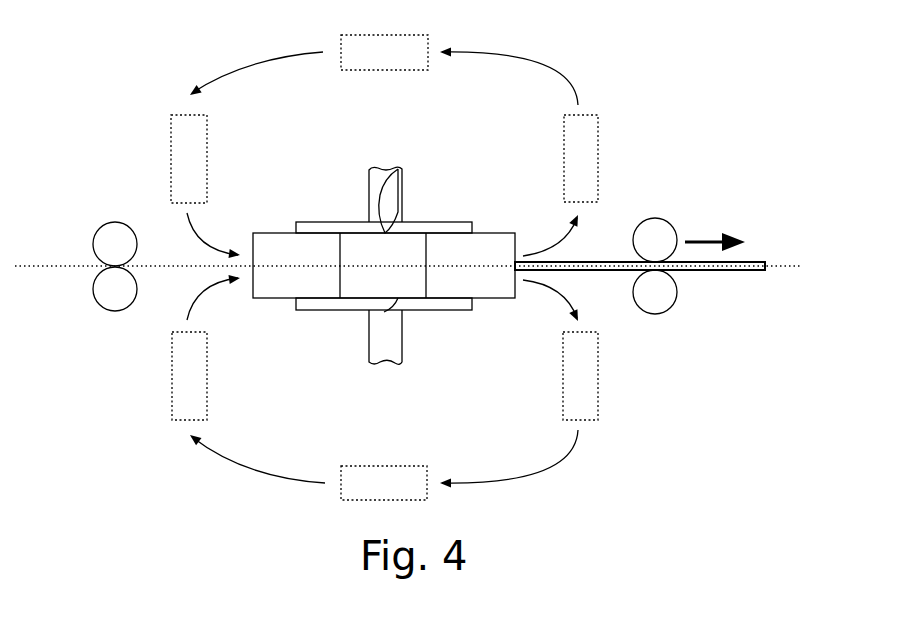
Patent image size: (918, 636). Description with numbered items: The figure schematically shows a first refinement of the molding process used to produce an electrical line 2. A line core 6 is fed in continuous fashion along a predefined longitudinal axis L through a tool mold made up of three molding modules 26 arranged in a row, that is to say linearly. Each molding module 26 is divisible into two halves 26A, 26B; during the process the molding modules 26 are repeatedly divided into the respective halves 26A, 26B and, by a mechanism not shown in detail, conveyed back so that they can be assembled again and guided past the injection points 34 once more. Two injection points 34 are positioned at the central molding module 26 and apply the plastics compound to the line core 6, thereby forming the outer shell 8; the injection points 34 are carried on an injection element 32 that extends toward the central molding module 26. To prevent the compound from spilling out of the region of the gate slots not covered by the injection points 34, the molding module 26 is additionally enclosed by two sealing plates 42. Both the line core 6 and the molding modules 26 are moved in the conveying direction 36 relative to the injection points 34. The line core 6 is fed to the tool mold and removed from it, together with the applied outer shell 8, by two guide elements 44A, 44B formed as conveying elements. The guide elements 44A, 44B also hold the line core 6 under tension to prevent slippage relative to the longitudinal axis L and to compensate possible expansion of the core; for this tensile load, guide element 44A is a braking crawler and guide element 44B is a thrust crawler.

The electrical line 2 is at (746, 279).
The line core 6 is at (693, 270).
The outer shell 8 is at (728, 270).
The molding module 26 is at (270, 233).
The first half of molding module 26A is at (598, 158).
The second half of molding module 26B is at (598, 380).
The forming tool 32 is at (369, 191).
The injection point 34 is at (398, 168).
The conveying direction 36 is at (708, 237).
The sealing plate 42 is at (450, 222).
The guide element 44A is at (113, 222).
The guide element 44B is at (655, 218).
The longitudinal axis L is at (780, 266).